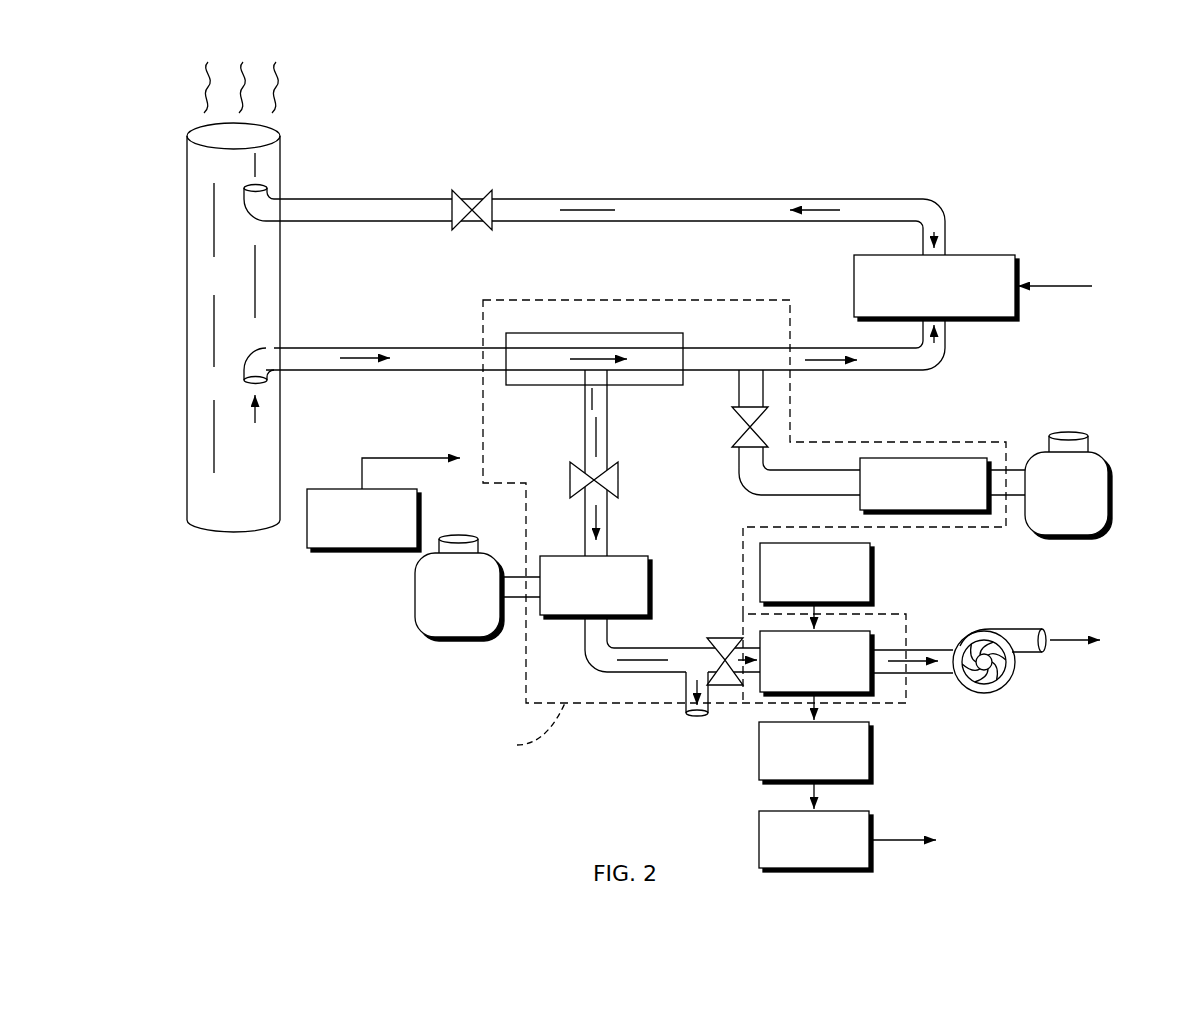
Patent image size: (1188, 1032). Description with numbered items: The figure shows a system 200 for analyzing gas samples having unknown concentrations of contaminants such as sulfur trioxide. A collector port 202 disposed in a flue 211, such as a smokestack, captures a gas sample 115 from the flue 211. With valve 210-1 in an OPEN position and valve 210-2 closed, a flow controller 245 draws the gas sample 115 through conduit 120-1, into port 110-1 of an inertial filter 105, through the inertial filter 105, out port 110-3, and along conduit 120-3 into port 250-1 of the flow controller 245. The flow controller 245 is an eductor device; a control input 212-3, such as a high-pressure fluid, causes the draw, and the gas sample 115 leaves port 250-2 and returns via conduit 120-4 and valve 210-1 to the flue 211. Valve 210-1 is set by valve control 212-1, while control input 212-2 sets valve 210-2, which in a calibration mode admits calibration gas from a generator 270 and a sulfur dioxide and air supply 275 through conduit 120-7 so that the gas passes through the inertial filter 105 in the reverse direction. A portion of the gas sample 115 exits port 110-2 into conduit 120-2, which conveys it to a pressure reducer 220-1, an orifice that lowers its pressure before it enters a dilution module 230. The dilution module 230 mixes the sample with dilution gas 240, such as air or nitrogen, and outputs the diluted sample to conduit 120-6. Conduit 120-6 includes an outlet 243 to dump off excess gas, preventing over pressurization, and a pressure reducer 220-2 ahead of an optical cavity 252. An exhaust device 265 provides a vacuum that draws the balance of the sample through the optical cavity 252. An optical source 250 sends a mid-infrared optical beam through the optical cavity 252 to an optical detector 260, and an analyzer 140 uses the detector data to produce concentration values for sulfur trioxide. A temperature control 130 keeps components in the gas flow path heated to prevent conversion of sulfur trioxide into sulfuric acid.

The system 200 is at (954, 138).
The flue 211 is at (232, 530).
The collector port 202 is at (262, 383).
The gas sample 115 is at (366, 356).
The conduit 120-1 is at (449, 348).
The port 110-1 is at (495, 358).
The inertial filter 105 is at (583, 333).
The port 110-2 is at (592, 396).
The port 110-3 is at (690, 358).
The conduit 120-2 is at (585, 453).
The conduit 120-3 is at (808, 348).
The conduit 120-4 is at (723, 199).
The conduit 120-6 is at (758, 645).
The conduit 120-7 is at (790, 495).
The valve 210-1 is at (460, 223).
The valve 210-2 is at (768, 427).
The valve control 212-1 is at (470, 190).
The control input 212-2 is at (766, 407).
The control input 212-3 is at (1086, 287).
The pressure reducer 220-1 is at (624, 480).
The pressure reducer 220-2 is at (725, 638).
The dilution module 230 is at (618, 556).
The dilution gas 240 is at (460, 637).
The outlet 243 is at (693, 715).
The flow controller 245 is at (1008, 255).
The port 250-1 is at (946, 346).
The port 250-2 is at (935, 228).
The optical source 250 is at (870, 568).
The optical cavity 252 is at (862, 692).
The optical detector 260 is at (870, 745).
The exhaust device 265 is at (997, 690).
The generator 270 is at (908, 458).
The SO2 and air supply 275 is at (1083, 432).
The temperature control 130 is at (356, 548).
The analyzer 140 is at (858, 811).